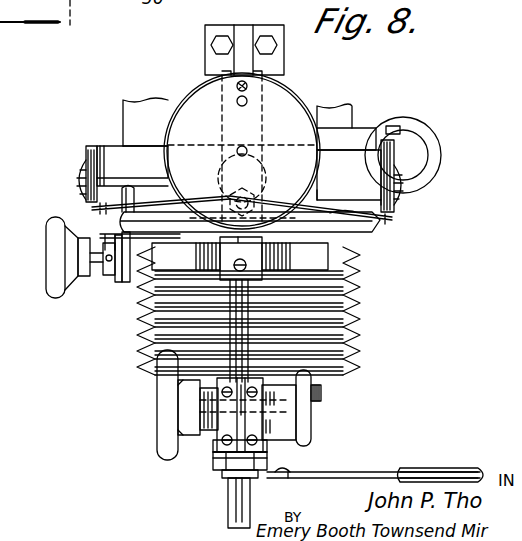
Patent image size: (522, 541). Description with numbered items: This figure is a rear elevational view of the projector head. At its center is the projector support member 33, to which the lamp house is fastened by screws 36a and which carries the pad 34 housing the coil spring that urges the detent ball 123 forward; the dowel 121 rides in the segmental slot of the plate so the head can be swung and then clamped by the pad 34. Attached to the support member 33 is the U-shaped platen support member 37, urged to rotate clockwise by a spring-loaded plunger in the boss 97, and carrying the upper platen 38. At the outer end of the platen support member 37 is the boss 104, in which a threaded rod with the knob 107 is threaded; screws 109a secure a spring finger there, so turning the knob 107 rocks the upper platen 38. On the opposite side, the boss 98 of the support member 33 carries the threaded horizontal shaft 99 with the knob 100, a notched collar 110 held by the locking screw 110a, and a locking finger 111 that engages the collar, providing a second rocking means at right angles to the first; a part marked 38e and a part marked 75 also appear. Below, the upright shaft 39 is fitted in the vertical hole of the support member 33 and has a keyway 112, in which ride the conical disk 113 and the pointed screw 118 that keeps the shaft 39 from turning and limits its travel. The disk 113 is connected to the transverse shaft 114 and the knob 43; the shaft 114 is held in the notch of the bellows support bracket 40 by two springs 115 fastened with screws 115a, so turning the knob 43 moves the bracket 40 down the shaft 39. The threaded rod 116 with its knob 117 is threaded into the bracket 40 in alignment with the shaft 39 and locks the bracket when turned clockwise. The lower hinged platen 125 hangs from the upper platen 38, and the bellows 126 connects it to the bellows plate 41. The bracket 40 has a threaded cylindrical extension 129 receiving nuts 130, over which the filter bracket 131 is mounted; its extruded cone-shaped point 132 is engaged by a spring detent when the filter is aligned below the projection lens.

The projector support member 33 is at (205, 66).
The pad 34 is at (283, 98).
The screws 36a is at (211, 45).
The platen support member 37 is at (110, 156).
The upper platen 38 is at (123, 121).
The knob 38e is at (80, 185).
The upright shaft 39 is at (230, 523).
The bellows support bracket 40 is at (265, 461).
The bellows plate 41 is at (321, 393).
The knob 43 is at (157, 386).
The block 75 is at (348, 113).
The boss 97 is at (318, 263).
The boss 98 is at (168, 300).
The threaded shaft 99 is at (103, 266).
The knob 100 is at (46, 251).
The boss 104 is at (404, 147).
The knob 107 is at (426, 161).
The screws 109a is at (393, 128).
The notched collar 110 is at (126, 283).
The locking screw 110a is at (118, 283).
The locking finger 111 is at (104, 236).
The keyway 112 is at (330, 348).
The conical disk 113 is at (241, 413).
The transversely extending shaft 114 is at (200, 404).
The springs 115 is at (225, 429).
The screws 115a is at (222, 461).
The threaded rod 116 is at (300, 411).
The knob 117 is at (311, 421).
The pointed screw 118 is at (242, 258).
The dowel 121 is at (247, 103).
The ball 123 is at (237, 86).
The lower hinged platen 125 is at (372, 226).
The bellows 126 is at (333, 312).
The threaded cylindrical extension 129 is at (250, 487).
The nuts 130 is at (215, 481).
The filter bracket 131 is at (368, 472).
The cone-shaped point 132 is at (286, 479).